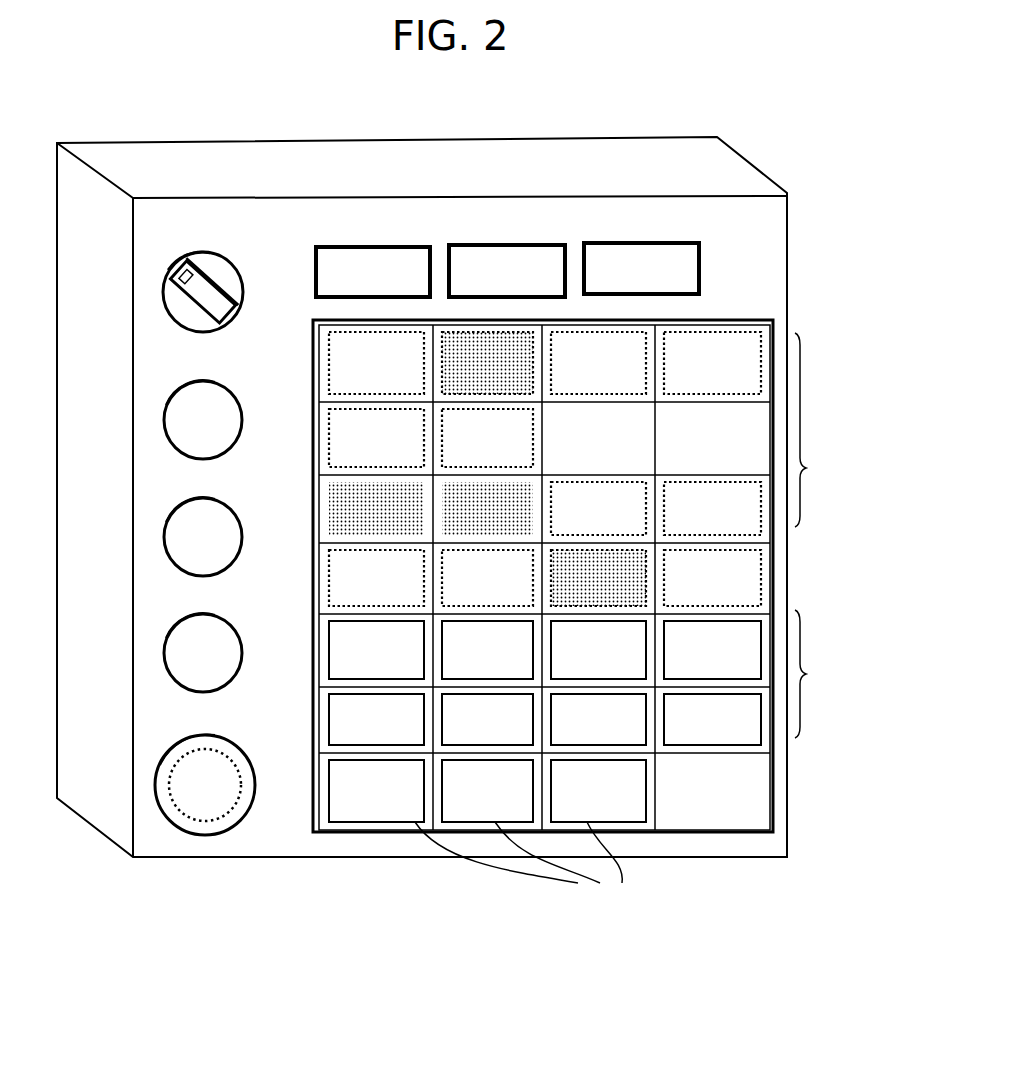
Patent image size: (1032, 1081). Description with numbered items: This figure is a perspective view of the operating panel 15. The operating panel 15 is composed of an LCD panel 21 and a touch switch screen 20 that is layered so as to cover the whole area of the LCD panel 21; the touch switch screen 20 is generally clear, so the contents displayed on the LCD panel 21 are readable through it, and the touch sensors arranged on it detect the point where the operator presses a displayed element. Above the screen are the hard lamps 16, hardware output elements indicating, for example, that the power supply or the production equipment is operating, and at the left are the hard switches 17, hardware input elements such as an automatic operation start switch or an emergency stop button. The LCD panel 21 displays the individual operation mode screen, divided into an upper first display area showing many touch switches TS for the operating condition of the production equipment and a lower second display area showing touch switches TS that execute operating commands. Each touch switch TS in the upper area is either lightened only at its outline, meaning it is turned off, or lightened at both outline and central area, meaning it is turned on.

The operating panel 15 is at (792, 186).
The hard lamps 16 is at (383, 247).
The hard switches 17 is at (240, 283).
The touch switch screen 20 is at (610, 599).
The LCD panel 21 is at (543, 576).
The touch switch TS is at (715, 388).